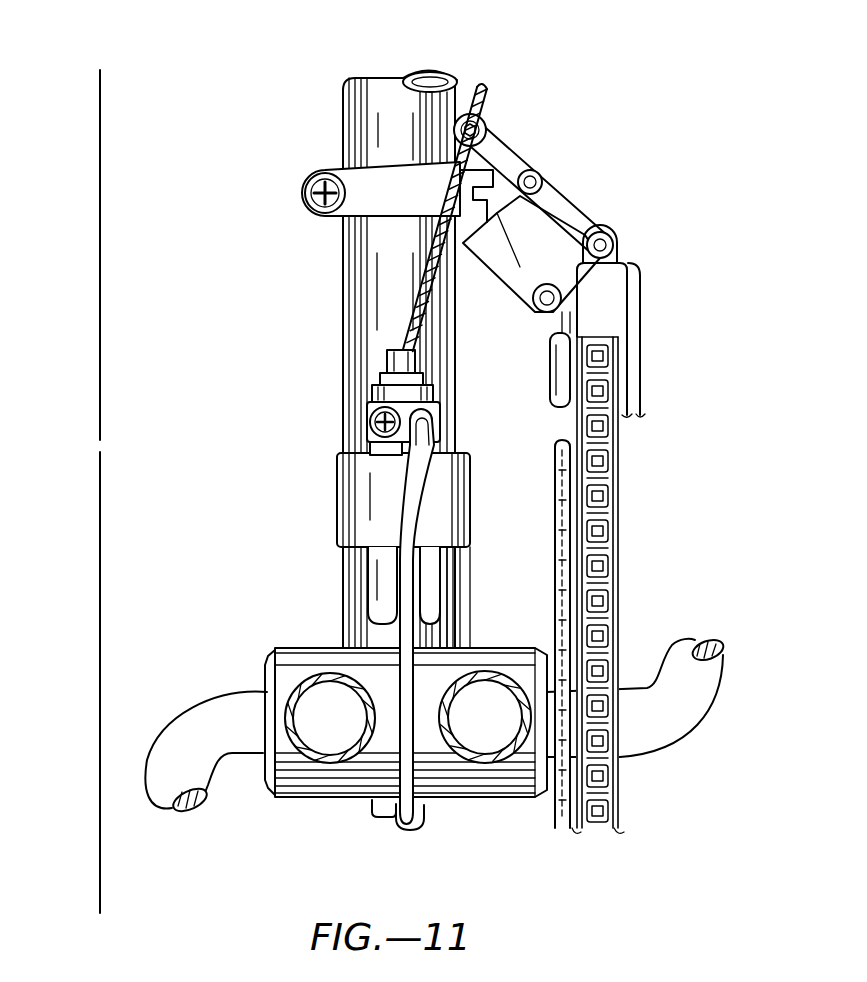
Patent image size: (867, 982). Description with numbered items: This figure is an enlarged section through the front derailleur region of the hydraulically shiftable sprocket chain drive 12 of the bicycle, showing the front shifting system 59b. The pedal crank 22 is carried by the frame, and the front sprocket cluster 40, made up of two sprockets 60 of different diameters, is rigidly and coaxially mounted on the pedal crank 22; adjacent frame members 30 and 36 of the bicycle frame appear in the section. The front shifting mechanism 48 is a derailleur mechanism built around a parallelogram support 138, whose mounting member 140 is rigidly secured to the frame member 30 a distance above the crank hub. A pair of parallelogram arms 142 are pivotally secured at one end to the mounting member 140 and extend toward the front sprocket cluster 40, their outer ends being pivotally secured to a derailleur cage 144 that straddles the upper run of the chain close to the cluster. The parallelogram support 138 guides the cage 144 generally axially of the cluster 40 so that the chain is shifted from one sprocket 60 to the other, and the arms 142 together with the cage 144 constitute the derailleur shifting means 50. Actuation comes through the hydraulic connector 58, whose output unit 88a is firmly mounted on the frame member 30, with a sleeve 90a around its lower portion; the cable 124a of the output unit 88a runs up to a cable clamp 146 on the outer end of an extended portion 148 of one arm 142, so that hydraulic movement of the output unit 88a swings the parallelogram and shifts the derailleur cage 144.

The sprocket chain drive 12 is at (118, 83).
The pedal crank 22 is at (693, 717).
The frame member 30 is at (345, 277).
The frame member 36 is at (473, 770).
The front sprocket cluster 40 is at (638, 582).
The front shifting mechanism 48 is at (670, 436).
The shifting means 50 is at (655, 270).
The hydraulic connector 58 is at (385, 635).
The shifting system 59b is at (318, 420).
The sprockets 60 is at (566, 520).
The output unit 88a is at (368, 581).
The sleeve 90a is at (400, 500).
The cable 124a is at (405, 305).
The parallelogram support 138 is at (552, 166).
The mounting member 140 is at (383, 195).
The parallelogram arms 142 is at (568, 222).
The derailleur cage 144 is at (640, 325).
The cable clamp 146 is at (488, 128).
The extended portion 148 is at (490, 147).